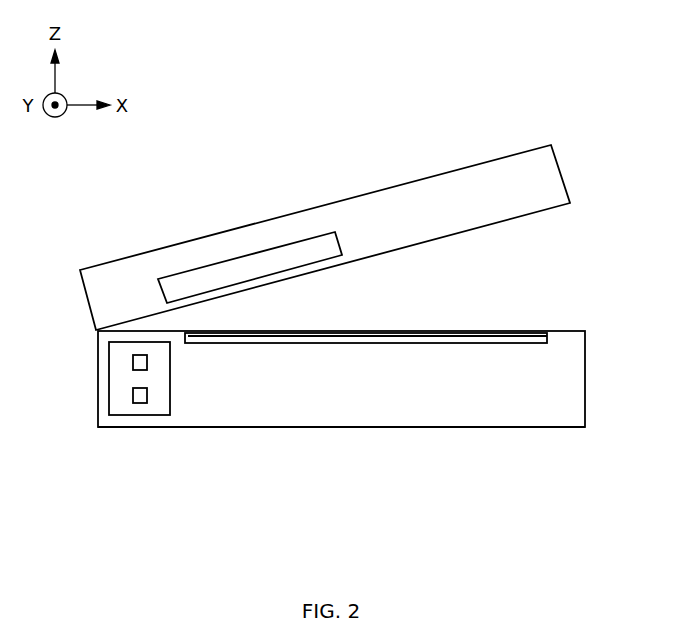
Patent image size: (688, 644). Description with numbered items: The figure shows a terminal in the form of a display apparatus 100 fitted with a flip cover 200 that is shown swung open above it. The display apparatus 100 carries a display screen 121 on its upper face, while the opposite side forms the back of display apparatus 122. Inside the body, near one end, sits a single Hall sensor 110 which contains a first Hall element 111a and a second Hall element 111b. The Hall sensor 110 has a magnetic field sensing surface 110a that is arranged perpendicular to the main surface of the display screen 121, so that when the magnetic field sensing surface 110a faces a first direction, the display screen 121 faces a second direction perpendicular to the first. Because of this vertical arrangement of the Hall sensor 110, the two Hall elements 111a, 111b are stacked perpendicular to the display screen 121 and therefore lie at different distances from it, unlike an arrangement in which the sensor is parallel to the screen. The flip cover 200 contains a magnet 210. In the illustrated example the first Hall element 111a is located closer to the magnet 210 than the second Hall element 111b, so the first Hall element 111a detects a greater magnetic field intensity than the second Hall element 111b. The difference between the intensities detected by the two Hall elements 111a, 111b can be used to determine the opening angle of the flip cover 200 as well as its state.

The display apparatus 100 is at (578, 475).
The Hall sensor 110 is at (143, 417).
The magnetic field sensing surface 110a is at (163, 382).
The first Hall element 111a is at (133, 363).
The second Hall element 111b is at (133, 397).
The display screen 121 is at (547, 339).
The back of display apparatus 122 is at (345, 428).
The flip cover 200 is at (522, 96).
The magnet 210 is at (252, 255).